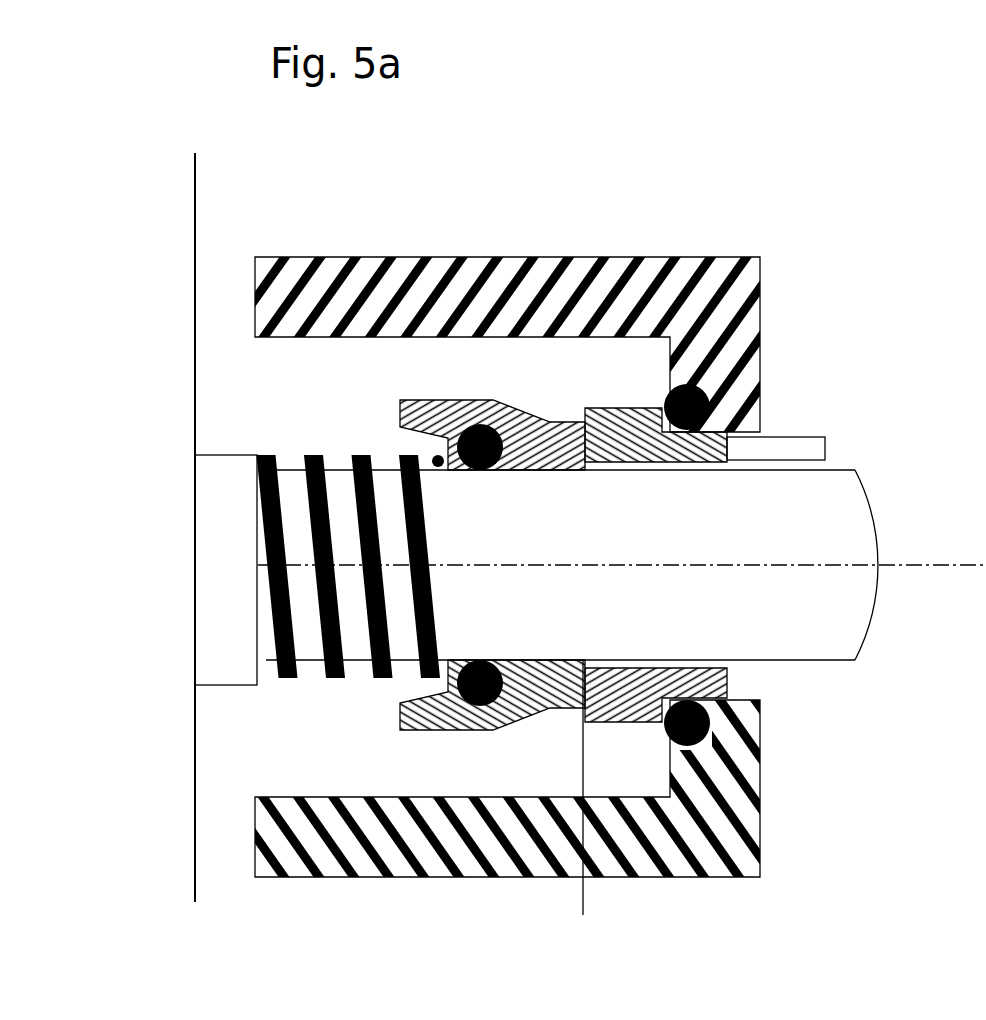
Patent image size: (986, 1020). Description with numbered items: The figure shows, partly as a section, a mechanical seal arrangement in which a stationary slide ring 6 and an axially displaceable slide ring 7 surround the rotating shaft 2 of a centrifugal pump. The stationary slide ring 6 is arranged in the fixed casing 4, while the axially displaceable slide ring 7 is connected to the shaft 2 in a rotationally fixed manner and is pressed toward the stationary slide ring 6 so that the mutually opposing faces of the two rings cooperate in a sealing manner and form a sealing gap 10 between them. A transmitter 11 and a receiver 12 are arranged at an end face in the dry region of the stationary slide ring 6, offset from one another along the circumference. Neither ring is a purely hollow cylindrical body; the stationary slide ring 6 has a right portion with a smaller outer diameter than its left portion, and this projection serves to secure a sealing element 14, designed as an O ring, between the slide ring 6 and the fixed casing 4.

The rotating shaft 2 is at (772, 513).
The fixed casing 4 is at (717, 272).
The stationary slide ring 6 is at (588, 405).
The axially displaceable slide ring 7 is at (447, 408).
The sealing gap 10 is at (580, 810).
The transmitter 11 is at (817, 452).
The receiver 12 is at (882, 558).
The sealing element 14 is at (702, 392).